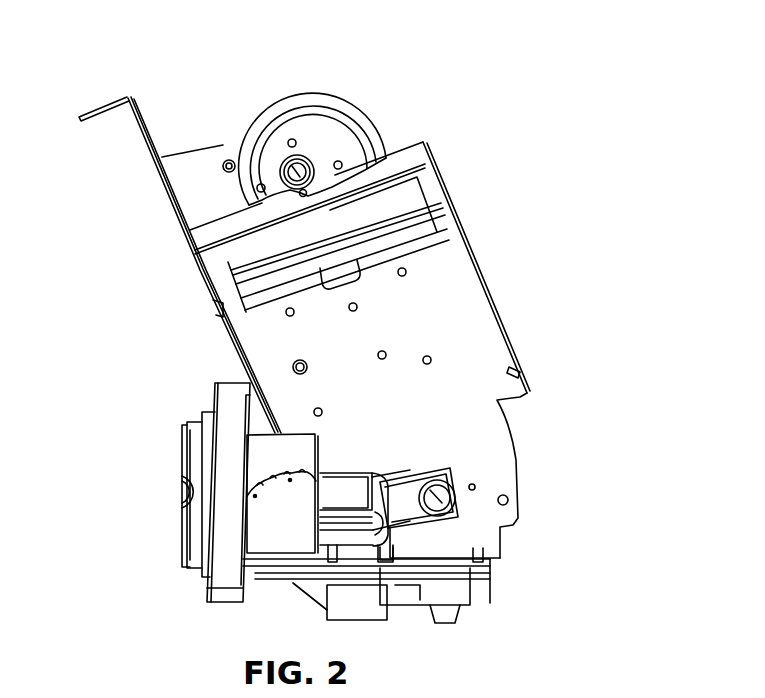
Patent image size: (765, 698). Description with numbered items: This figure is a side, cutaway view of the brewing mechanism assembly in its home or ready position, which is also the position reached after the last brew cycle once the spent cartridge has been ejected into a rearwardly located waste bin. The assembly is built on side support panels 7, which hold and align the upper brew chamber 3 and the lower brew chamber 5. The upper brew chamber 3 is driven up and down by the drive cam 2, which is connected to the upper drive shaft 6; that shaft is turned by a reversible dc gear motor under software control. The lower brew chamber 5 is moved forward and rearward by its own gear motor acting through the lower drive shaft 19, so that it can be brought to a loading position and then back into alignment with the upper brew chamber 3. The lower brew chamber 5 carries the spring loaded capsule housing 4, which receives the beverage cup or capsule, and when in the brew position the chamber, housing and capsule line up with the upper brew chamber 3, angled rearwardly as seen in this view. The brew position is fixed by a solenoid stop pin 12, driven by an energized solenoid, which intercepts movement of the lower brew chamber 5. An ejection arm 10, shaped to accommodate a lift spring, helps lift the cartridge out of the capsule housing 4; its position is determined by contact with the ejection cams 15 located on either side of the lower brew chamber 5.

The drive cam 2 is at (330, 150).
The upper brew chamber 3 is at (373, 192).
The capsule housing 4 is at (187, 520).
The lower brew chamber 5 is at (293, 453).
The upper drive shaft 6 is at (282, 172).
The side support panels 7 is at (473, 387).
The ejection arm 10 is at (247, 495).
The solenoid stop pin 12 is at (290, 365).
The ejection cams 15 is at (287, 537).
The lower drive shaft 19 is at (445, 503).